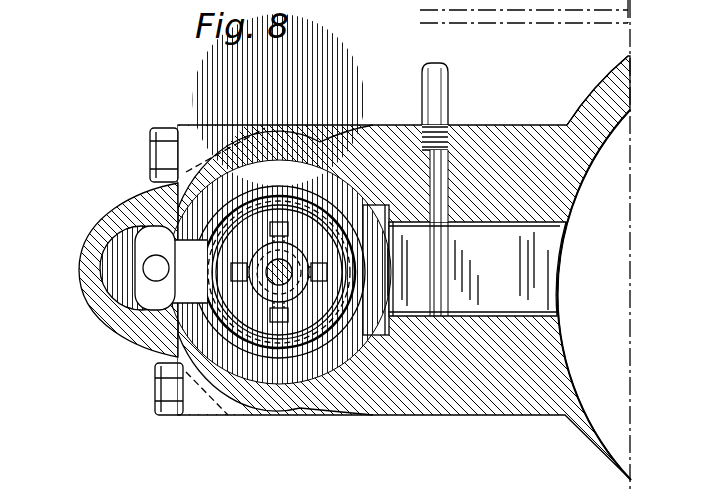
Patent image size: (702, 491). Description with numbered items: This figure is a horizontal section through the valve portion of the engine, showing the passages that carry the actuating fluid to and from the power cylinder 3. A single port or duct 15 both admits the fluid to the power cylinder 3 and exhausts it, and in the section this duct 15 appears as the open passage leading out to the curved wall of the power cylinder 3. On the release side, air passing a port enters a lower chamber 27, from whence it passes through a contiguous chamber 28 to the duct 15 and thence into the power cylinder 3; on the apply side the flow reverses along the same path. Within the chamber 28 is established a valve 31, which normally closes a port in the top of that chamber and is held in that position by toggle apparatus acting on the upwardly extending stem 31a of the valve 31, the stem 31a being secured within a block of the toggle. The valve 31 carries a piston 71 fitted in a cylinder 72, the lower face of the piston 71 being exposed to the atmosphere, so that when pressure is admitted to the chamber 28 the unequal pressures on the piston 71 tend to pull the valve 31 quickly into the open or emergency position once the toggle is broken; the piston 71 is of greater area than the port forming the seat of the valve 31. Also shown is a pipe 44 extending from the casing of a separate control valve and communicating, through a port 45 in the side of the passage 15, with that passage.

The power cylinder 3 is at (567, 183).
The port or duct 15 is at (510, 268).
The lower chamber 27 is at (118, 268).
The chamber 28 is at (272, 160).
The valve 31 is at (320, 246).
The stem 31a is at (285, 282).
The pipe 44 is at (448, 91).
The port 45 is at (443, 165).
The piston 71 is at (323, 211).
The cylinder 72 is at (294, 190).